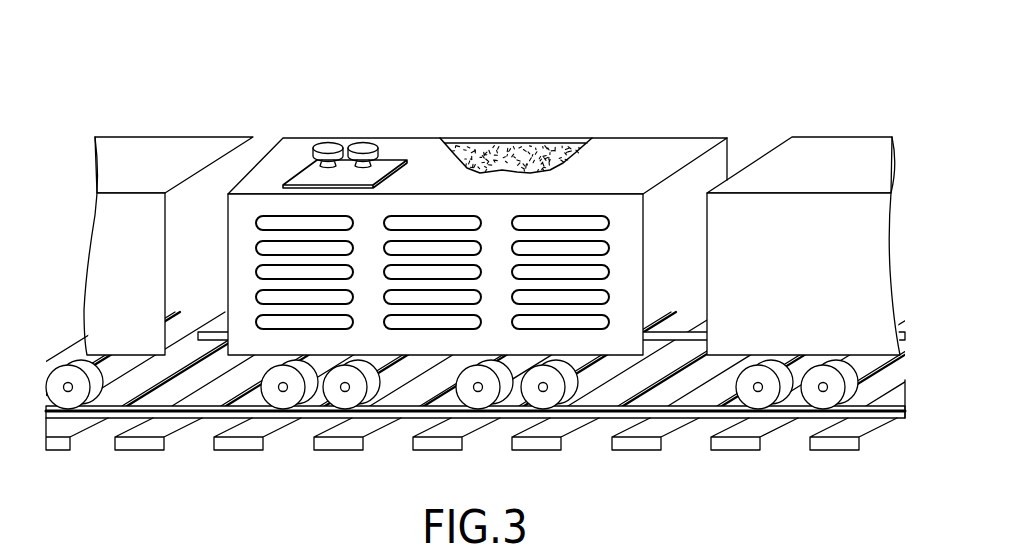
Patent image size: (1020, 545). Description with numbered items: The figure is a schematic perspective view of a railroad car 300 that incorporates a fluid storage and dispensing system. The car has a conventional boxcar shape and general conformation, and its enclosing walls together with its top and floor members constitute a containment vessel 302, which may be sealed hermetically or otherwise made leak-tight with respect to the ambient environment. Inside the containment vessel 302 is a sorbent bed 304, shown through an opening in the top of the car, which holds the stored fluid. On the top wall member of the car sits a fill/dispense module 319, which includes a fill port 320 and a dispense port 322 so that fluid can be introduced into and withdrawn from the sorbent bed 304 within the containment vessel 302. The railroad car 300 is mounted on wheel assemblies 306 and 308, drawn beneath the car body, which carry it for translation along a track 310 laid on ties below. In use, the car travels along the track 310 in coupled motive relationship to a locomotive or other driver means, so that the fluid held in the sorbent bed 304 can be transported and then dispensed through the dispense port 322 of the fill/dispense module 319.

The railroad car 300 is at (509, 270).
The containment vessel 302 is at (476, 228).
The sorbent bed 304 is at (495, 145).
The wheel assembly 306 is at (483, 400).
The wheel assembly 308 is at (293, 400).
The track 310 is at (803, 466).
The fill/dispense module 319 is at (307, 144).
The fill port 320 is at (325, 143).
The dispense port 322 is at (370, 143).